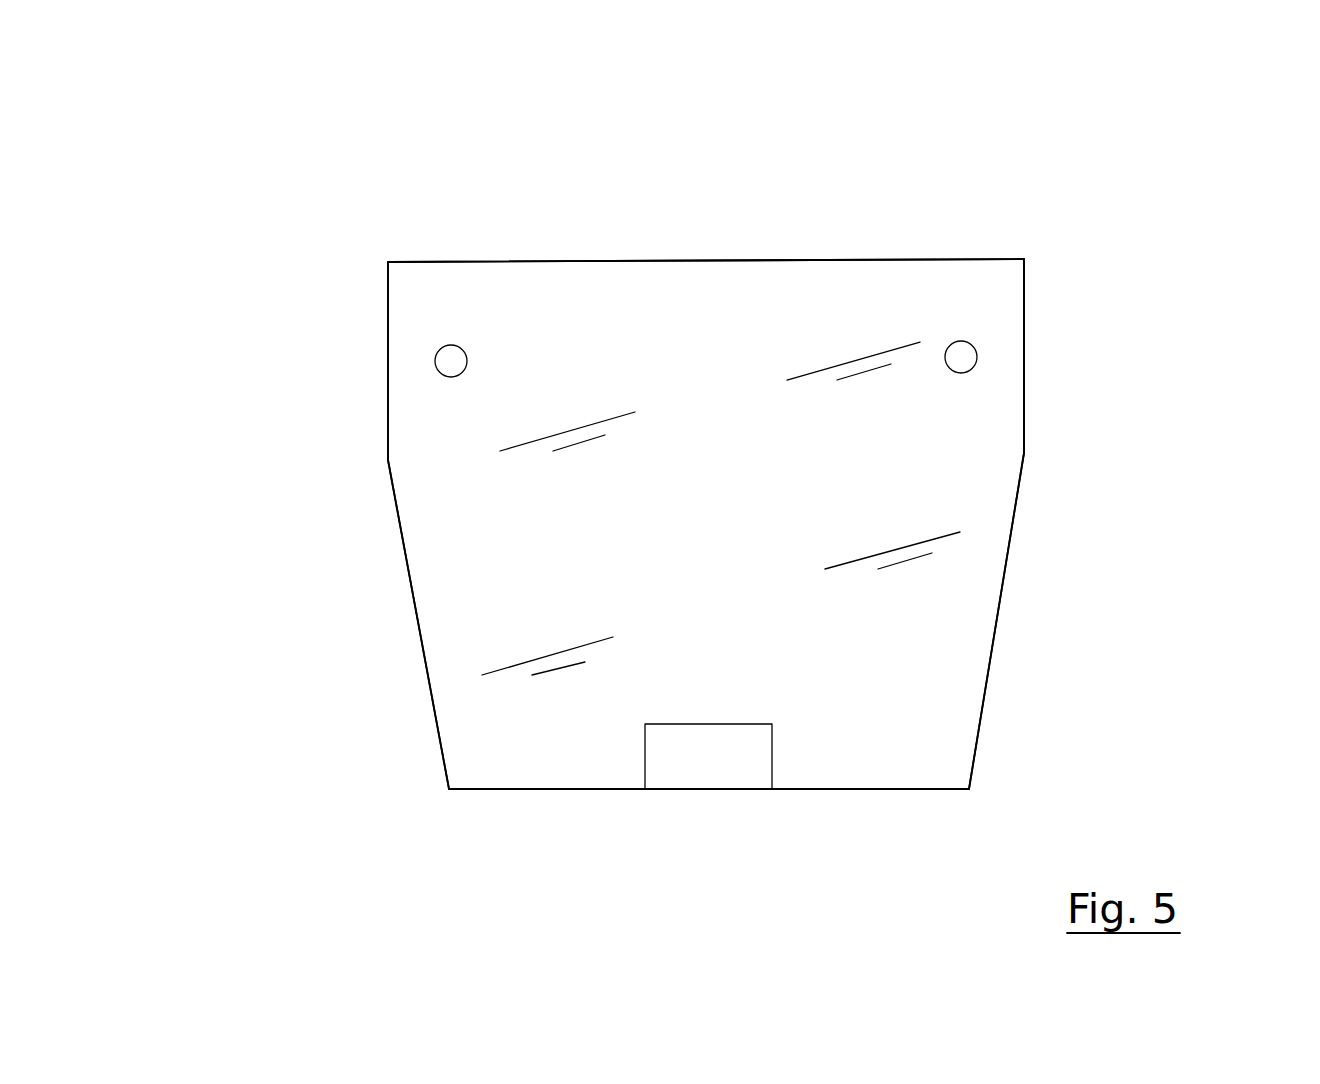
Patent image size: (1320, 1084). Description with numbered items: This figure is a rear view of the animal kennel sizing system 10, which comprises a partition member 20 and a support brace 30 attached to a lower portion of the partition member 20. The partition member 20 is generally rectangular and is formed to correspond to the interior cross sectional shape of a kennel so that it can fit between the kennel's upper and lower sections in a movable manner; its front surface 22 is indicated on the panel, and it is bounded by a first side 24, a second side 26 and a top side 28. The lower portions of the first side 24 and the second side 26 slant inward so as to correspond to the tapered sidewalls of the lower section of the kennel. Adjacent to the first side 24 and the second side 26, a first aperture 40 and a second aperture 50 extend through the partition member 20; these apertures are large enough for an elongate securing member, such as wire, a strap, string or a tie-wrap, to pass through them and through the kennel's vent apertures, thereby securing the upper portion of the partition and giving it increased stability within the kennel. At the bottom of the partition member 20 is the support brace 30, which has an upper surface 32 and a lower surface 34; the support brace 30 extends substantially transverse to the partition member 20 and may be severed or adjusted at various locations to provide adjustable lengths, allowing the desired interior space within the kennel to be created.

The animal kennel sizing system 10 is at (1062, 208).
The partition member 20 is at (381, 256).
The front surface 22 is at (905, 665).
The first side 24 is at (1025, 406).
The second side 26 is at (388, 413).
The top side 28 is at (698, 261).
The support brace 30 is at (780, 714).
The upper surface 32 is at (675, 722).
The lower surface 34 is at (707, 790).
The first aperture 40 is at (442, 352).
The second aperture 50 is at (970, 347).